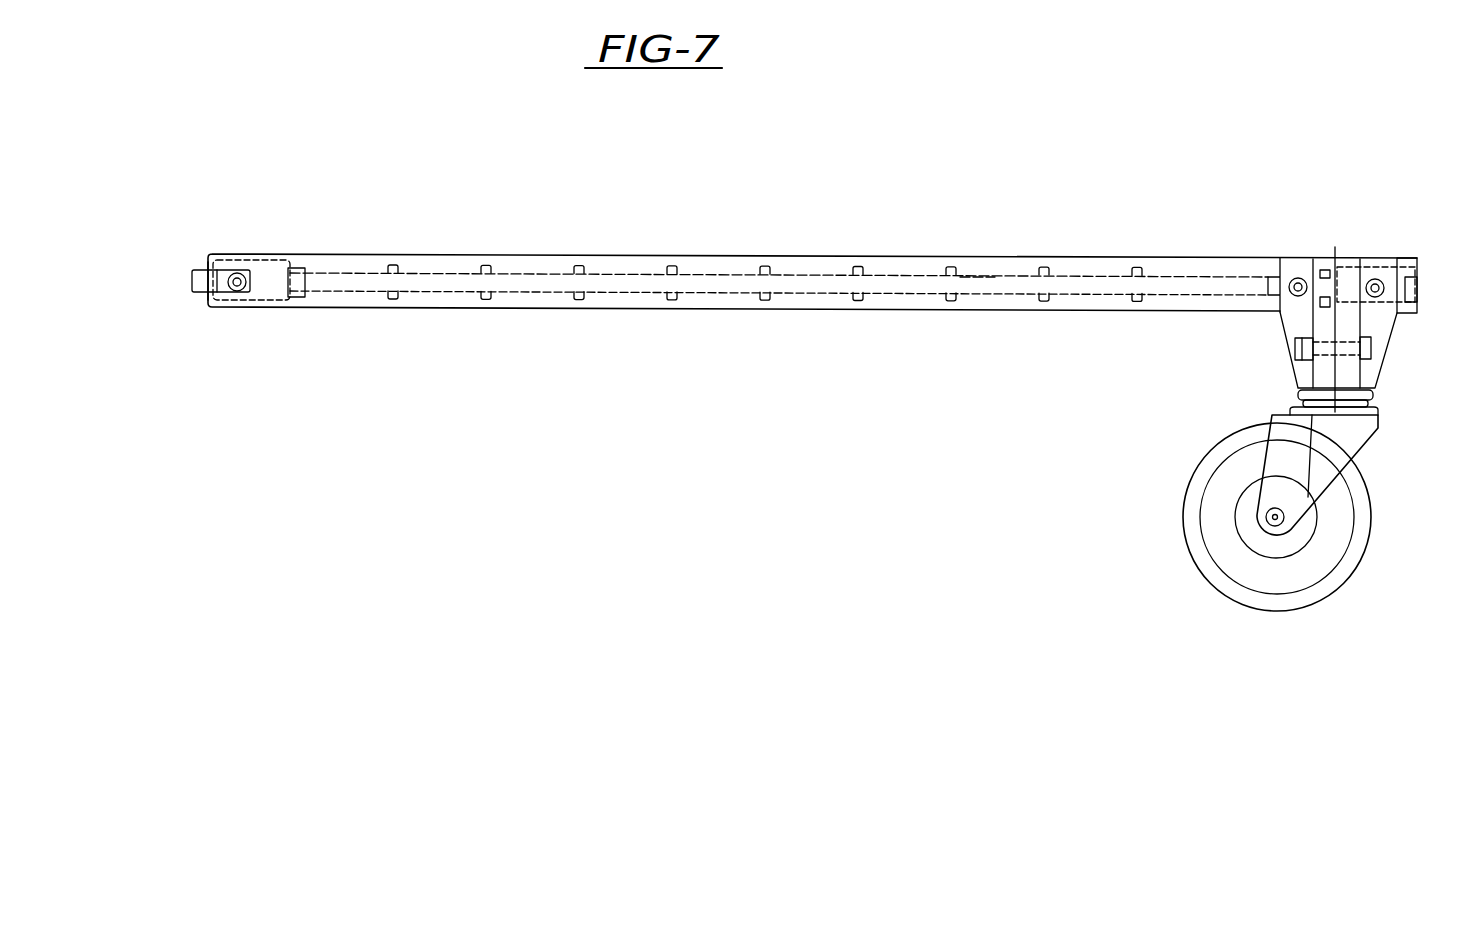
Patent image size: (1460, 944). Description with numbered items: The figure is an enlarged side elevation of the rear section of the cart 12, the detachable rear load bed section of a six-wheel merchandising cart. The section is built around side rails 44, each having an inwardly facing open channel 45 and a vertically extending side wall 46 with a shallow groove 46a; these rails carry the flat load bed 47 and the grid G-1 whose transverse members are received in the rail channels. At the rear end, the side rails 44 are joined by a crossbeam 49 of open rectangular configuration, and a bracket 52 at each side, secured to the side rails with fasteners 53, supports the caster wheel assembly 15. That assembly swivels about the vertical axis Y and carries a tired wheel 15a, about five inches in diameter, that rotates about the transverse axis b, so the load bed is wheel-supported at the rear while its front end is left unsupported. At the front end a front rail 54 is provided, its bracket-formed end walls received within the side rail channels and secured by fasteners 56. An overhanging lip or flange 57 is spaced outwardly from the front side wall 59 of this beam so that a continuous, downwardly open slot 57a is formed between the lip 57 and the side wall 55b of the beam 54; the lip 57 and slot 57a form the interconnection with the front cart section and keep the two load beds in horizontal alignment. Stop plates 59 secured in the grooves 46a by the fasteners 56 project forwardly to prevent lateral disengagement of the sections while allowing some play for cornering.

The rear section of the cart 12 is at (465, 233).
The flat load bed 47 is at (747, 263).
The open channels 45 is at (898, 280).
The side walls 46 is at (1107, 283).
The shallow grooves 46a is at (1083, 277).
The grid G-1 is at (977, 277).
The side wall of beam 55b is at (220, 280).
The front rail 54 is at (257, 258).
The front side wall / stop plates 59 is at (280, 283).
The overhanging lip or flange 57 is at (193, 282).
The continuous slot or slit 57a is at (201, 287).
The fasteners 56 is at (245, 285).
The side rails 44 is at (1183, 255).
The fasteners 53 is at (1287, 280).
The crossbeam 49 is at (1357, 260).
The bracket 52 is at (1290, 322).
The vertical axis Y is at (1337, 382).
The caster wheel assembly 15 is at (1168, 502).
The tired wheel 15a is at (1355, 552).
The transverse axis b is at (1270, 518).